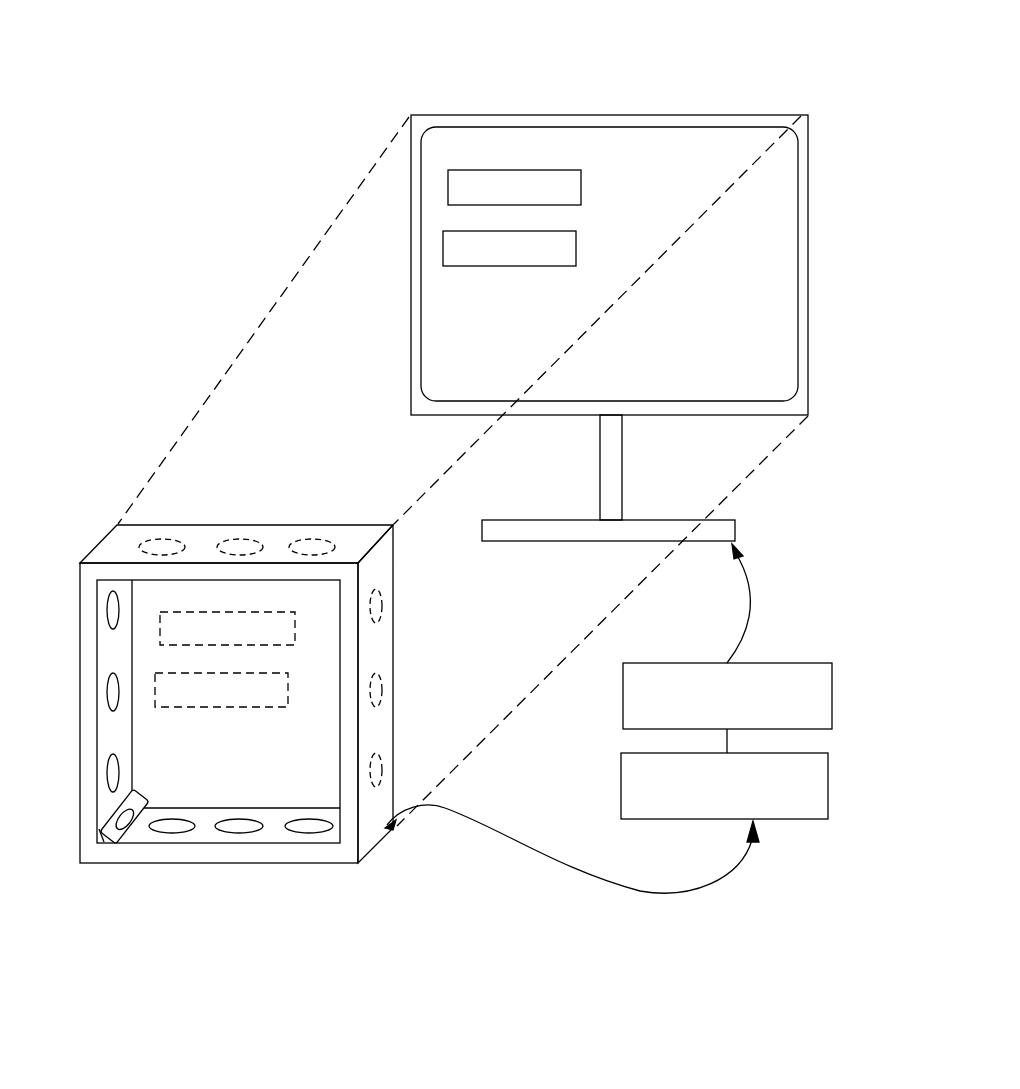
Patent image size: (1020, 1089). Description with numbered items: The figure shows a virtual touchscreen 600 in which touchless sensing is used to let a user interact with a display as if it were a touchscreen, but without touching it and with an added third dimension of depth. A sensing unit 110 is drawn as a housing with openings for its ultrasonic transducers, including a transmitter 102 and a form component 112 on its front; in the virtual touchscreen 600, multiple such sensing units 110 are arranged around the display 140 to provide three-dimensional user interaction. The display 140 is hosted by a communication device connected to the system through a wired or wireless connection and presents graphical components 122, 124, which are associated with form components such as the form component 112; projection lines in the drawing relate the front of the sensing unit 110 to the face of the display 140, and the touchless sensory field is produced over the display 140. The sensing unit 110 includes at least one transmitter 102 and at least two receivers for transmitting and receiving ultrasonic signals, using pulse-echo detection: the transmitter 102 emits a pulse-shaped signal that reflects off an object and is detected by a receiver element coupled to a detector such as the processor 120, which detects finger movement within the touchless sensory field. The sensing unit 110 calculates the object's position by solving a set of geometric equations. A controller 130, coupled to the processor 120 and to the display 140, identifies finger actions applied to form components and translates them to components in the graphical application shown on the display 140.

The virtual touchscreen 600 is at (252, 92).
The transmitter 102 is at (107, 617).
The sensing unit 110 is at (208, 716).
The form component 112 is at (138, 797).
The processor 120 is at (828, 783).
The graphical component 122 is at (582, 177).
The graphical component 124 is at (577, 239).
The controller 130 is at (832, 688).
The display 140 is at (647, 328).